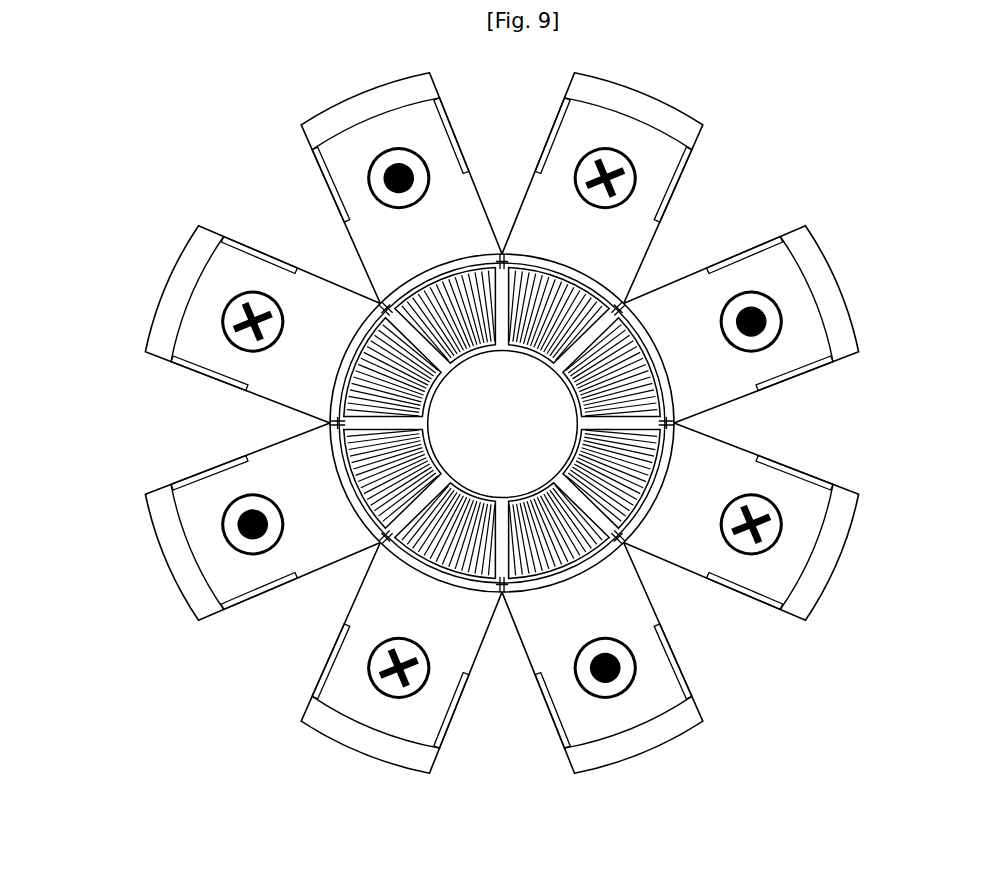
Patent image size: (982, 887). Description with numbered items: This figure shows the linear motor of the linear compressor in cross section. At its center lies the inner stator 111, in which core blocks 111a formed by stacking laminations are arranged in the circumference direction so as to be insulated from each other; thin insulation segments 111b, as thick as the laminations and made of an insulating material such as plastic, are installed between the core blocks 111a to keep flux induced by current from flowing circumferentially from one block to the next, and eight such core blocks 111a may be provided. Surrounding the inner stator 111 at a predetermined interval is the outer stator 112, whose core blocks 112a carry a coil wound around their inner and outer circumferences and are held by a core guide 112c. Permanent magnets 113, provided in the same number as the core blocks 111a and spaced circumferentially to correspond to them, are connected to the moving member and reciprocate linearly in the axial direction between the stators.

The inner stator 111 is at (210, 95).
The core blocks 111a is at (407, 282).
The insulation segments 111b is at (390, 317).
The outer stator 112 is at (150, 577).
The core blocks 112a is at (197, 500).
The core guide 112c is at (165, 522).
The permanent magnet 113 is at (383, 550).